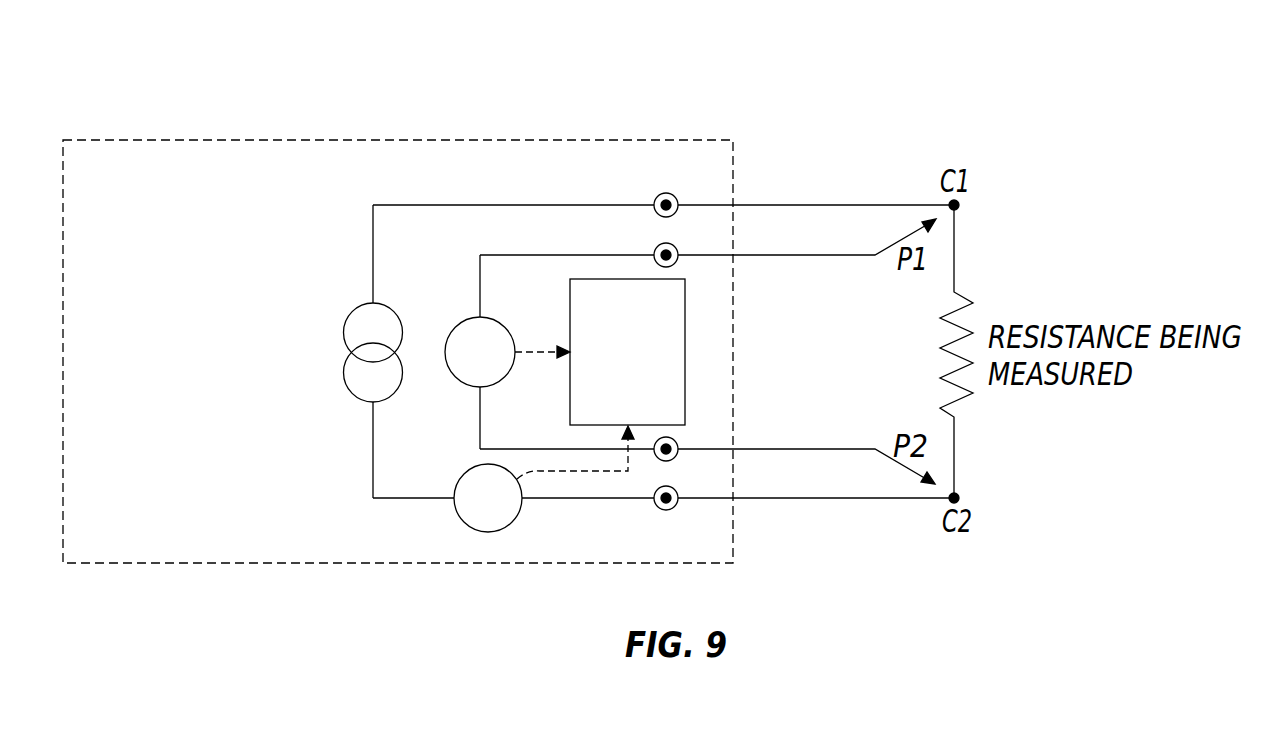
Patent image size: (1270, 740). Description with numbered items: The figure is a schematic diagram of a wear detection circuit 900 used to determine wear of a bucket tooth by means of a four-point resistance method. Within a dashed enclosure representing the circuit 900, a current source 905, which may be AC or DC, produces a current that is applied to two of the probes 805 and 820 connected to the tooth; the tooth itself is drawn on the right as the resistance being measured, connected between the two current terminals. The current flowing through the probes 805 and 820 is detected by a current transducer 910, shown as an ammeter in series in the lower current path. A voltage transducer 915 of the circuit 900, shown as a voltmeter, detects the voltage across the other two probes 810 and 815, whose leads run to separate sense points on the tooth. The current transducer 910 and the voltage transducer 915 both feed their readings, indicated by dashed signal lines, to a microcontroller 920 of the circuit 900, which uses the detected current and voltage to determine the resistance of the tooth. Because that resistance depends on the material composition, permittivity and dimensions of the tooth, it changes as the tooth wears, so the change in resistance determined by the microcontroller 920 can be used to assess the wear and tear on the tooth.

The wear detection circuit 900 is at (417, 112).
The current source 905 is at (354, 396).
The current transducer 910 is at (462, 520).
The voltage transducer 915 is at (455, 323).
The microcontroller 920 is at (615, 279).
The probe 805 is at (667, 193).
The probe 810 is at (674, 262).
The probe 815 is at (674, 442).
The probe 820 is at (671, 507).